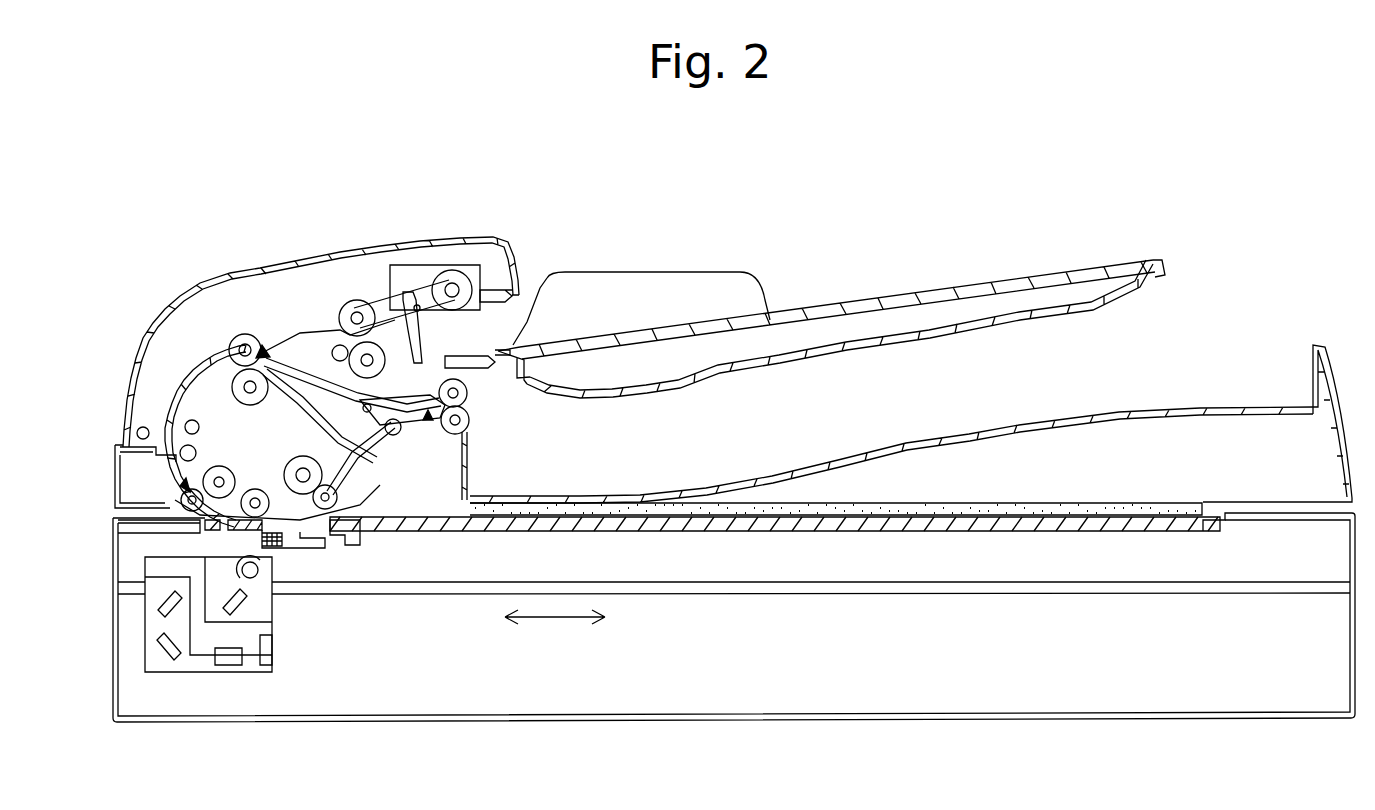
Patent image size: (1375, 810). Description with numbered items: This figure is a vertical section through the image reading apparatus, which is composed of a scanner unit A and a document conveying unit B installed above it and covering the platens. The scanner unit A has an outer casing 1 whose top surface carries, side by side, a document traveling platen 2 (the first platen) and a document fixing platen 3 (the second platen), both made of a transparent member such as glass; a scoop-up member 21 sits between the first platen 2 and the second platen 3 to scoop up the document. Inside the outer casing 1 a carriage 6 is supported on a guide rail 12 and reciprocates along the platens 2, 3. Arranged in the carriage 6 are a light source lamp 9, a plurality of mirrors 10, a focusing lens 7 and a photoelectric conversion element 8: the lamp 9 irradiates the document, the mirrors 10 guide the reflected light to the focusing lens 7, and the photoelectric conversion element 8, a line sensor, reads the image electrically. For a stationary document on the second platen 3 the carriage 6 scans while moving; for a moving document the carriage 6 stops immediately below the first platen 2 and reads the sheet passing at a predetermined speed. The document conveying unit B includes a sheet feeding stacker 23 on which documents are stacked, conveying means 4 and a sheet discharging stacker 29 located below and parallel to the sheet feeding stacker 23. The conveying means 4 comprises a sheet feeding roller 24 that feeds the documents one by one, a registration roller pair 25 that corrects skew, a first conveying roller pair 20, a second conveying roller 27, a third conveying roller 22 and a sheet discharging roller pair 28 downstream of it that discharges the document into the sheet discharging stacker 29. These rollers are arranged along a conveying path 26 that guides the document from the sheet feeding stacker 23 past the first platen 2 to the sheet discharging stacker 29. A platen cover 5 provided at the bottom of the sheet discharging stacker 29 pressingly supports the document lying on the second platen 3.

The outer casing 1 is at (238, 724).
The document traveling platen 2 is at (200, 534).
The document fixing platen 3 is at (716, 530).
The conveying means 4 is at (270, 298).
The platen cover 5 is at (962, 500).
The carriage 6 is at (250, 675).
The focusing lens 7 is at (228, 670).
The photoelectric conversion element 8 is at (268, 652).
The light source lamp 9 is at (262, 570).
The mirrors 10 is at (160, 598).
The guide rail 12 is at (395, 598).
The first conveying roller pair 20 is at (220, 468).
The scoop-up member 21 is at (318, 550).
The third conveying roller 22 is at (305, 460).
The sheet feeding stacker 23 is at (830, 305).
The sheet feeding roller 24 is at (357, 312).
The registration roller pair 25 is at (232, 340).
The conveying path 26 is at (196, 382).
The second conveying roller 27 is at (256, 490).
The sheet discharging roller pair 28 is at (468, 420).
The sheet discharging stacker 29 is at (830, 462).
The scanner unit A is at (472, 750).
The document conveying unit B is at (760, 192).